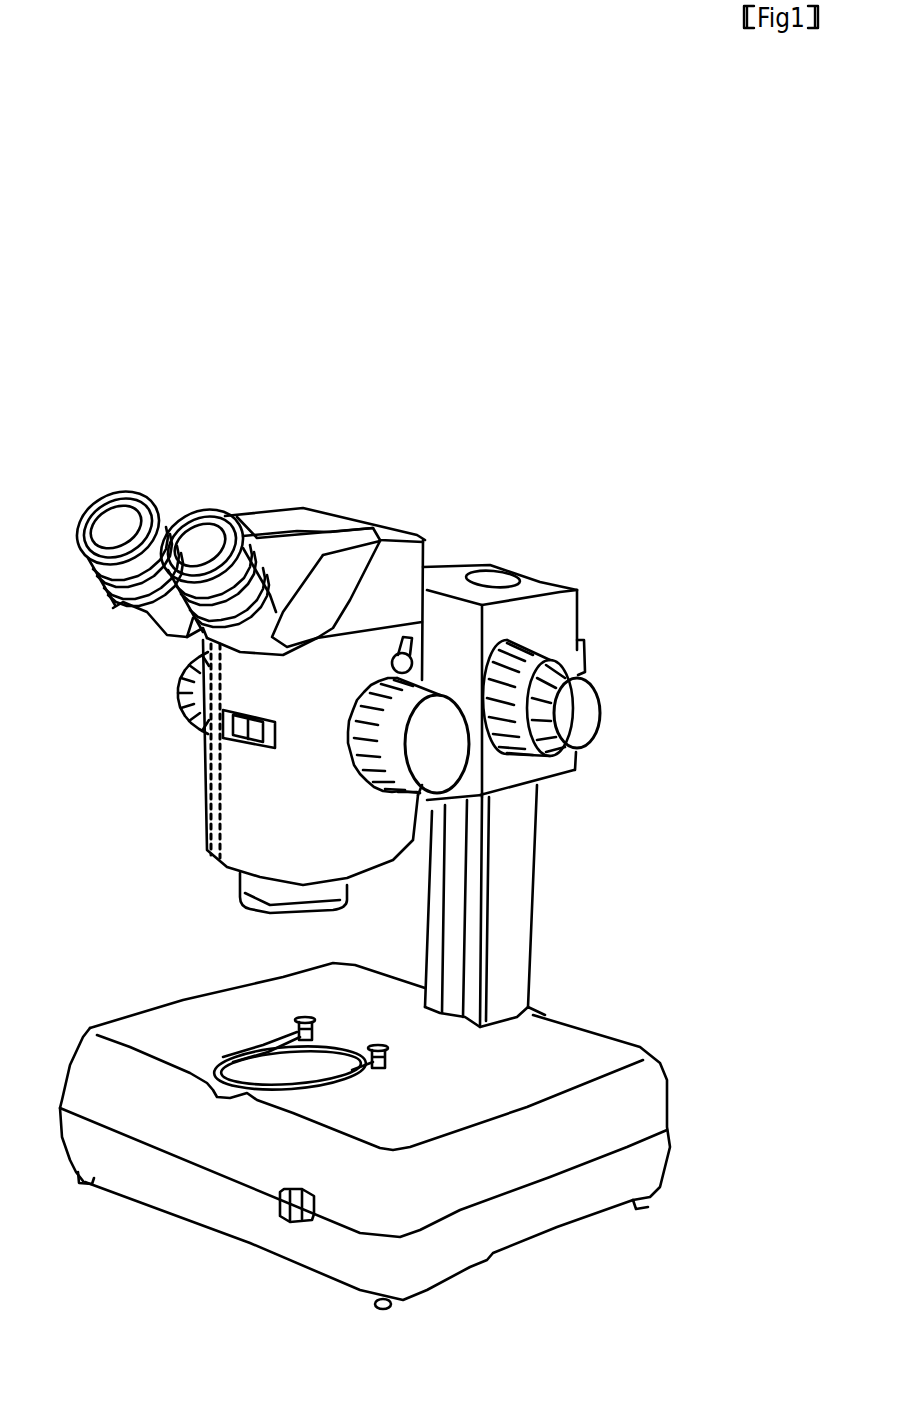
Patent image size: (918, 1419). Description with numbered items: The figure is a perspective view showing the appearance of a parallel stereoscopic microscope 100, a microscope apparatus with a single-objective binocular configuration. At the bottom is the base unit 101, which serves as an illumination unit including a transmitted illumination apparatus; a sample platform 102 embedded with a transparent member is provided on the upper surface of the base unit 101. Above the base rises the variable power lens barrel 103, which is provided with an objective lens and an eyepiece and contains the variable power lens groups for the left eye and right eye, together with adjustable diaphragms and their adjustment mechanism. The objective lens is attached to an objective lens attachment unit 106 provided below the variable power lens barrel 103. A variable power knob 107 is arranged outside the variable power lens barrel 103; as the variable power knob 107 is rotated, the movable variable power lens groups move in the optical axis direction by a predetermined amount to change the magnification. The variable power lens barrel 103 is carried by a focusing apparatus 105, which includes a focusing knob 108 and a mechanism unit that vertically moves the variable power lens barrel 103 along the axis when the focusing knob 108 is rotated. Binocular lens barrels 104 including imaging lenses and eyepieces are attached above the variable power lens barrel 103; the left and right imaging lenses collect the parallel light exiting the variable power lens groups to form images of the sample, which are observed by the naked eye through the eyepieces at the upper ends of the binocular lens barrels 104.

The parallel stereoscopic microscope 100 is at (493, 440).
The base unit 101 is at (555, 1207).
The sample platform 102 is at (220, 1062).
The variable power lens barrel 103 is at (238, 793).
The binocular lens barrels 104 is at (217, 508).
The focusing apparatus 105 is at (566, 605).
The objective lens attachment unit 106 is at (236, 884).
The variable power knob 107 is at (430, 783).
The focusing knob 108 is at (573, 735).